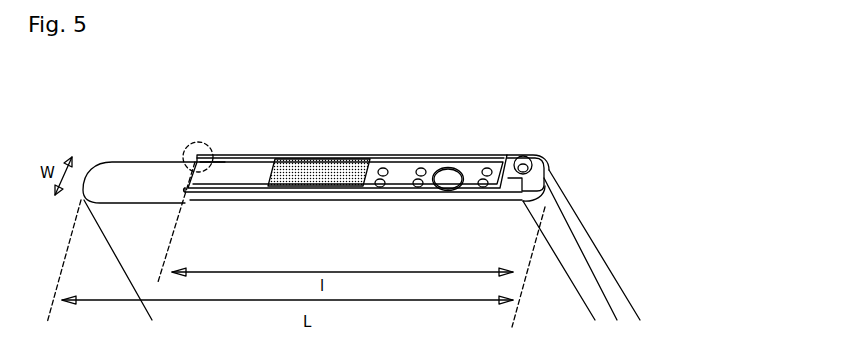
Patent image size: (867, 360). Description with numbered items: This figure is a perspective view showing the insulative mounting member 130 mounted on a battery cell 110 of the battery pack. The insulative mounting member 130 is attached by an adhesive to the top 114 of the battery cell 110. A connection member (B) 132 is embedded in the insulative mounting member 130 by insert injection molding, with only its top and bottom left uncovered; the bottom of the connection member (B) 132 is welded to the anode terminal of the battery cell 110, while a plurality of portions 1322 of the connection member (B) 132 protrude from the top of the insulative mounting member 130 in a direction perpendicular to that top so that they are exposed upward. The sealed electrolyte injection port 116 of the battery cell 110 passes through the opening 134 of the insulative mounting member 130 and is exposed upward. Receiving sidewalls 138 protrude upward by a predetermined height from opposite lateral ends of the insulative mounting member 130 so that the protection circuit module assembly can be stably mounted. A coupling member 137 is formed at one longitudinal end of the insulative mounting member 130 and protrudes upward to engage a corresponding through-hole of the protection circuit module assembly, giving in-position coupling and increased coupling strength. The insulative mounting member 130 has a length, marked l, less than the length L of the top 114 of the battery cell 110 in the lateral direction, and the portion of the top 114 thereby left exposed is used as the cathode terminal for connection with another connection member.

The battery cell 110 is at (617, 272).
The top of the battery cell 114 is at (118, 174).
The sealed electrolyte injection port 116 is at (452, 169).
The insulative mounting member 130 is at (257, 143).
The connection member (B) 132 is at (300, 165).
The opening of the insulative mounting member 134 is at (465, 169).
The coupling member 137 is at (525, 156).
The receiving sidewalls 138 is at (198, 147).
The portions of the connection member (B) 1322 is at (385, 158).